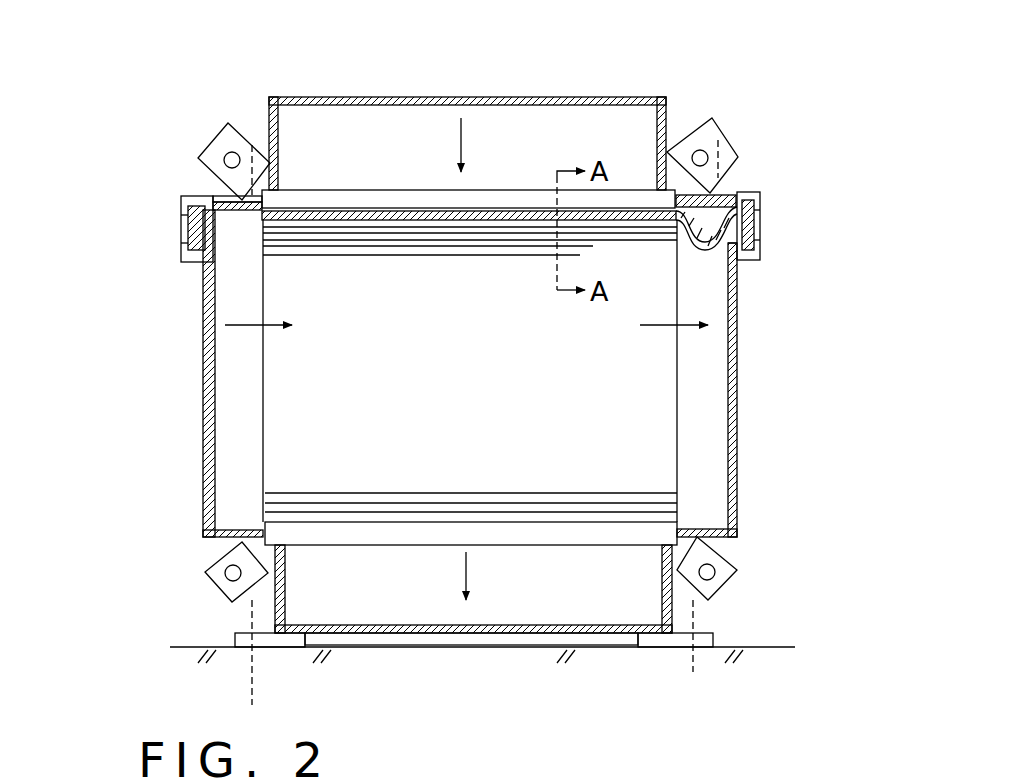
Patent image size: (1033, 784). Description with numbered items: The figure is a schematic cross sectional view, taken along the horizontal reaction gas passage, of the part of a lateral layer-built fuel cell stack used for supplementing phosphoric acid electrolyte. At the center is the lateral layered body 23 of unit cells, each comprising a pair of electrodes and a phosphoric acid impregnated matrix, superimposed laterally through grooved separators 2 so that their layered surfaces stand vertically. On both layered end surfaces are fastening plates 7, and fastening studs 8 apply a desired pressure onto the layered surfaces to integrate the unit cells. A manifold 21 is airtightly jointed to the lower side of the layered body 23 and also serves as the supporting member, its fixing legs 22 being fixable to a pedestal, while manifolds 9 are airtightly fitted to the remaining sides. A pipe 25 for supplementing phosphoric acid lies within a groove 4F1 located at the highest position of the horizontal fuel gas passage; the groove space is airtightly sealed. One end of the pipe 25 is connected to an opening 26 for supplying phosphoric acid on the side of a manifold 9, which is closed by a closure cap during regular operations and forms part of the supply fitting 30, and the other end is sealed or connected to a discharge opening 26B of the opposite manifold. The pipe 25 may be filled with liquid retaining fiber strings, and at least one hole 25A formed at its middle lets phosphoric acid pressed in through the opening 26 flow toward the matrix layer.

The grooved separator 2 is at (280, 287).
The insulating sheet layer 4F1 is at (262, 219).
The fastening plate 7 is at (724, 574).
The fastening stud 8 is at (213, 578).
The manifold 9 is at (272, 128).
The manifold 21 is at (397, 615).
The fixing leg 22 is at (246, 648).
The lateral layered body of unit cells 23 is at (258, 370).
The pipe for supplementing phosphoric acid 25 is at (740, 205).
The hole for supplementing phosphoric acid 25A is at (548, 214).
The opening for supplying phosphoric acid 26 is at (768, 205).
The opening for discharge 26B is at (182, 232).
The sealing fitting assembly 30 is at (726, 0).